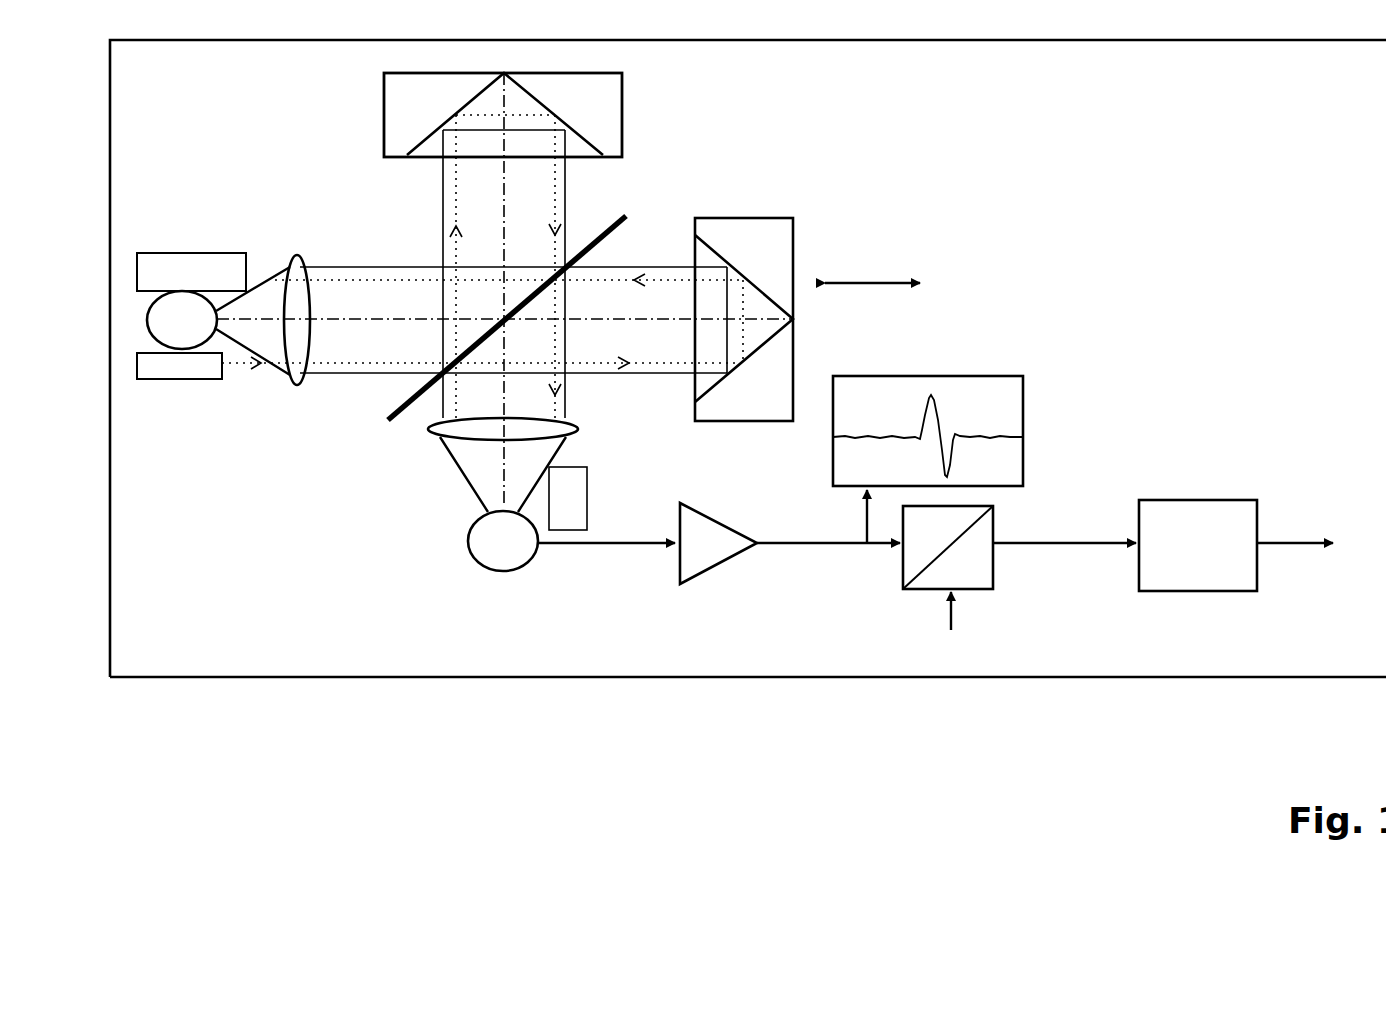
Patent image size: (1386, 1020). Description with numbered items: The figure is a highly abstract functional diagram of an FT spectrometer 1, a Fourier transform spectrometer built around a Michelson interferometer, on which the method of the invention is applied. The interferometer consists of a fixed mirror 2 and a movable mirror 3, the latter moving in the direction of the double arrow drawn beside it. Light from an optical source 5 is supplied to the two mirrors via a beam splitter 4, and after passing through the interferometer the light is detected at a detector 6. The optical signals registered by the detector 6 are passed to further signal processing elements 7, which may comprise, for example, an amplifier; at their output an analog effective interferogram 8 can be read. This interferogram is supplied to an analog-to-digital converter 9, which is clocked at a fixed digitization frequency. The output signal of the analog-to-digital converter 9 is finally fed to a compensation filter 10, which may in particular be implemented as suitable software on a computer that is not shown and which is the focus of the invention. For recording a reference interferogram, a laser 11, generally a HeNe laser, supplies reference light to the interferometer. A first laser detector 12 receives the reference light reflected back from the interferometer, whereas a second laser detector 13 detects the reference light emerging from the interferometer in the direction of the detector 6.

The FT spectrometer 1 is at (553, 678).
The fixed mirror 2 is at (405, 108).
The movable mirror 3 is at (762, 238).
The beam splitter 4 is at (388, 422).
The optical source 5 is at (148, 328).
The detector 6 is at (483, 543).
The signal processing elements 7 is at (718, 553).
The analog effective interferogram 8 is at (973, 376).
The analog-to-digital converter 9 is at (993, 570).
The compensation filter 10 is at (1185, 507).
The laser 11 is at (196, 373).
The first laser detector 12 is at (188, 262).
The second laser detector 13 is at (578, 495).